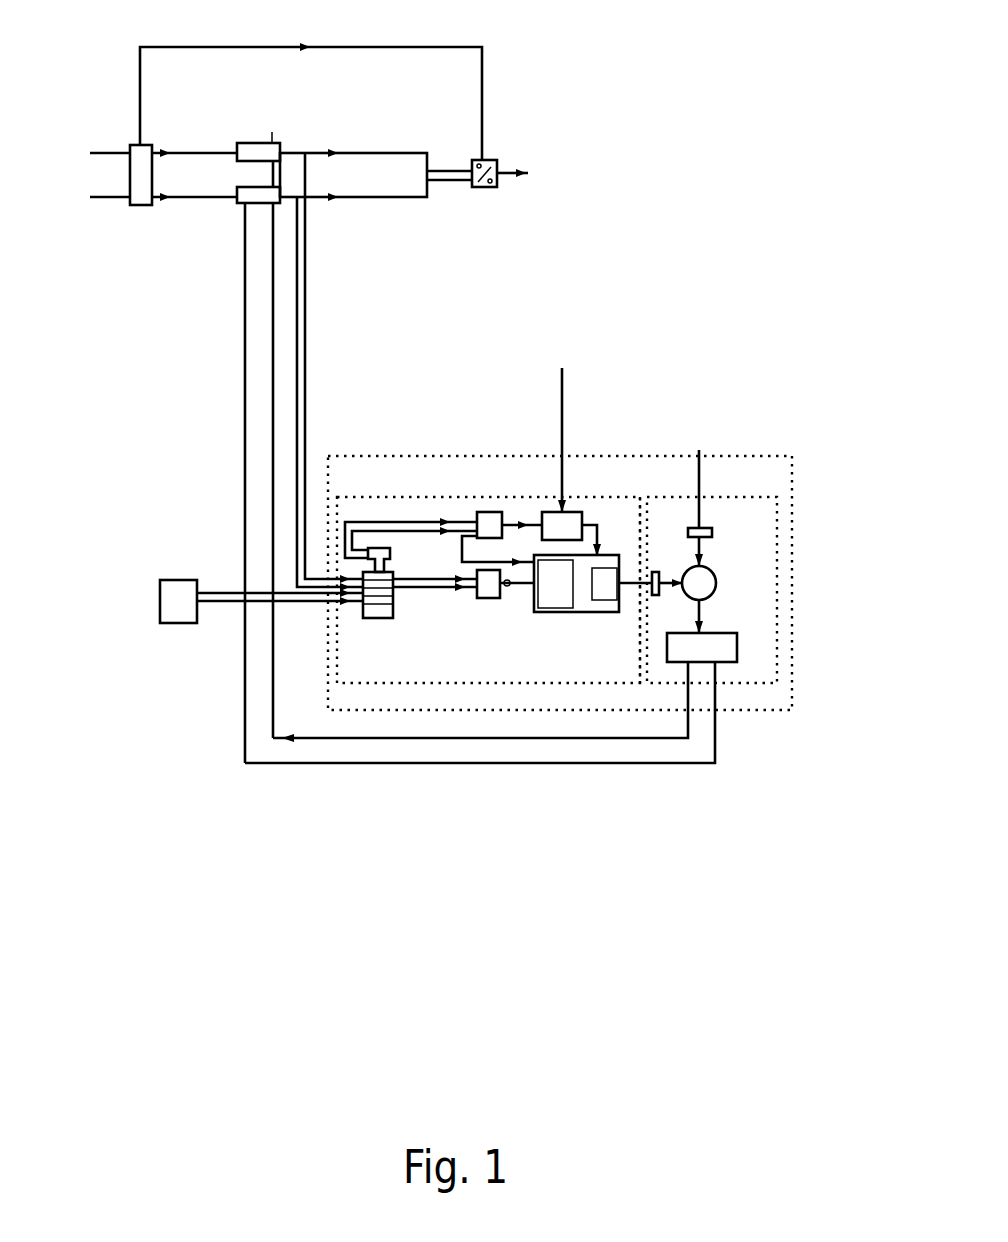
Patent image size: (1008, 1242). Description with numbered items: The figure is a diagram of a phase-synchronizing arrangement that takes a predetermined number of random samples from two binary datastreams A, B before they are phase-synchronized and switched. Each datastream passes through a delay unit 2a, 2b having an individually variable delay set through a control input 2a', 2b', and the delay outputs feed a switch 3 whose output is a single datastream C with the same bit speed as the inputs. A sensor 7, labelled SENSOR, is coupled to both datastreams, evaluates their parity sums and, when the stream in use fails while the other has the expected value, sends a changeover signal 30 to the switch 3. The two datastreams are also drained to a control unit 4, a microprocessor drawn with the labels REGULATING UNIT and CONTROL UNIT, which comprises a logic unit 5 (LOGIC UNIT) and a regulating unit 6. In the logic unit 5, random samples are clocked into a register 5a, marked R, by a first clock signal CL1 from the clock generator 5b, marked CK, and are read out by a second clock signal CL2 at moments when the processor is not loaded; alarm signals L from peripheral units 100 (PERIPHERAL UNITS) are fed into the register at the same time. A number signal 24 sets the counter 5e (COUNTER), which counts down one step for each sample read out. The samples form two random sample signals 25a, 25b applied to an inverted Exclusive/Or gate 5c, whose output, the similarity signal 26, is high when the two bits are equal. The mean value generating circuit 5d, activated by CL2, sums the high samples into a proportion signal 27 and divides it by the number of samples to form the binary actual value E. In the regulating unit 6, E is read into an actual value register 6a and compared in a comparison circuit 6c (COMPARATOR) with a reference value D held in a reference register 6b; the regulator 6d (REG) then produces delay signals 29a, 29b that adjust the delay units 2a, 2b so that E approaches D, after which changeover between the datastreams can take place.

The changeover signal 30 is at (286, 46).
The sensor 7 is at (136, 158).
The first binary datastream A is at (90, 153).
The second binary datastream B is at (90, 197).
The output datastream C is at (519, 173).
The sensor SENSOR is at (140, 201).
The first delay unit 2a is at (248, 139).
The second delay unit 2b is at (248, 185).
The control input of first delay unit 2a' is at (351, 159).
The control input of second delay unit 2b' is at (196, 483).
The reference value D is at (800, 343).
The switch 3 is at (490, 160).
The number signal 24 is at (563, 398).
The regulating unit REGULATING UNIT is at (660, 510).
The control unit 4 is at (792, 476).
The logic unit 5 is at (367, 482).
The regulating unit 6 is at (736, 487).
The logic unit LOGIC UNIT is at (350, 497).
The control unit CONTROL UNIT is at (782, 470).
The first clock signal CL1 is at (415, 538).
The second clock signal CL2 is at (383, 530).
The clock generator 5b is at (499, 512).
The clock CK is at (480, 528).
The counter 5e is at (562, 532).
The counter COUNTER is at (609, 413).
The register 5a is at (386, 620).
The register label R is at (393, 612).
The inverted Exclusive/Or gate 5c is at (500, 598).
The similarity signal 26 is at (543, 612).
The proportion signal 27 is at (605, 568).
The mean value generating circuit 5d is at (598, 612).
The actual value E is at (656, 572).
The comparison circuit COMPARATOR is at (660, 597).
The actual value register 6a is at (692, 600).
The reference register 6b is at (712, 536).
The comparison circuit 6c is at (714, 594).
The regulator 6d is at (710, 645).
The regulator REG is at (816, 644).
The first delay signal 29a is at (305, 740).
The second delay signal 29b is at (327, 765).
The first random sample signal 25a is at (442, 588).
The second random sample signal 25b is at (423, 581).
The peripheral units 100 is at (180, 597).
The peripheral units PERIPHERAL UNITS is at (180, 587).
The alarm signals L is at (238, 593).